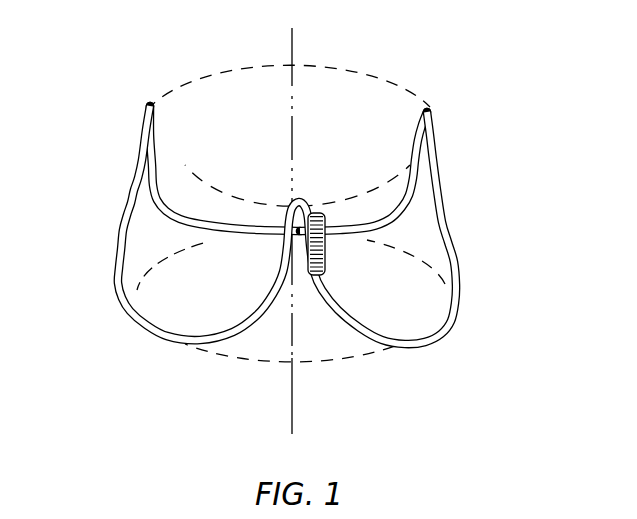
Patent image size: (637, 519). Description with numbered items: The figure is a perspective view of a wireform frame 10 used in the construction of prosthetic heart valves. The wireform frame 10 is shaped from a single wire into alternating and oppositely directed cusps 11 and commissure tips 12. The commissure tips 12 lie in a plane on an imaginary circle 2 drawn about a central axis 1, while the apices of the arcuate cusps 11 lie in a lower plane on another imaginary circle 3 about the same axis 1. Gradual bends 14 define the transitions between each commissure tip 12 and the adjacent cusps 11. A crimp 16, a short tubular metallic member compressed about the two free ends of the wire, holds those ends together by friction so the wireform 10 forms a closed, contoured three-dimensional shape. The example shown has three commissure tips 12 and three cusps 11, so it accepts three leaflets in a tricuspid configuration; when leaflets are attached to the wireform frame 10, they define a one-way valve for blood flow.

The axis 1 is at (292, 45).
The imaginary circle 2 is at (192, 80).
The imaginary circle 3 is at (332, 362).
The wireform frame 10 is at (281, 228).
The cusps 11 is at (447, 337).
The commissure tips 12 is at (428, 112).
The gradual bends 14 is at (121, 222).
The crimp 16 is at (330, 243).